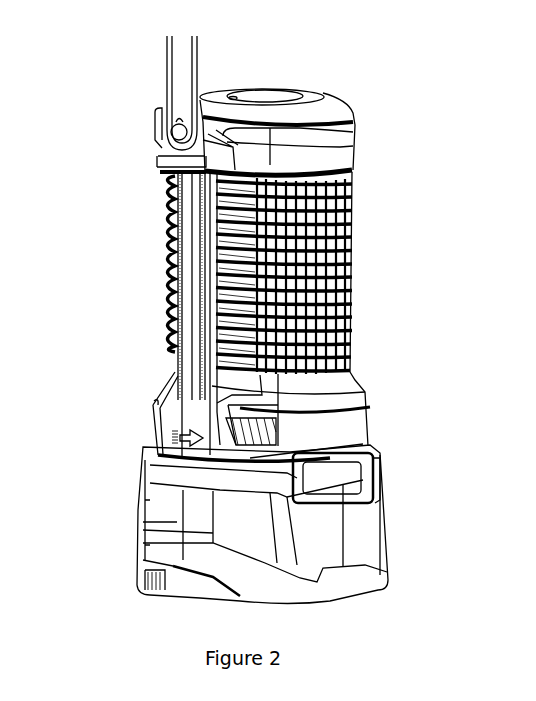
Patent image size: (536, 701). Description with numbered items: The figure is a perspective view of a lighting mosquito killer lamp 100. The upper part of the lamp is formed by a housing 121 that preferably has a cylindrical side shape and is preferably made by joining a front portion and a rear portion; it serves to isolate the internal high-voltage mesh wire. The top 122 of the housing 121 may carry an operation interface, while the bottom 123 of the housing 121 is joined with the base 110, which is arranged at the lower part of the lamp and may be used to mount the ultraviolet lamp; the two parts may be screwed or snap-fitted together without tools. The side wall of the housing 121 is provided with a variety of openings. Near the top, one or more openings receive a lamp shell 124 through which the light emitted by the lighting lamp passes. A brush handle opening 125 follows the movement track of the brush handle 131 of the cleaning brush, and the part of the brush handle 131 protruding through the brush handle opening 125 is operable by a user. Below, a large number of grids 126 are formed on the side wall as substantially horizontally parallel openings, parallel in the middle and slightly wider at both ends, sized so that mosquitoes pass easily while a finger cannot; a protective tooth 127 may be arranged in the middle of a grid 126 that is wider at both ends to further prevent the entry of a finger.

The lighting mosquito killer lamp 100 is at (243, 320).
The base 110 is at (362, 523).
The housing 121 is at (240, 386).
The top 122 is at (300, 97).
The bottom 123 is at (385, 462).
The lamp shell 124 is at (300, 140).
The brush handle opening 125 is at (163, 275).
The grids 126 is at (355, 275).
The protective tooth 127 is at (208, 340).
The brush handle 131 is at (163, 177).